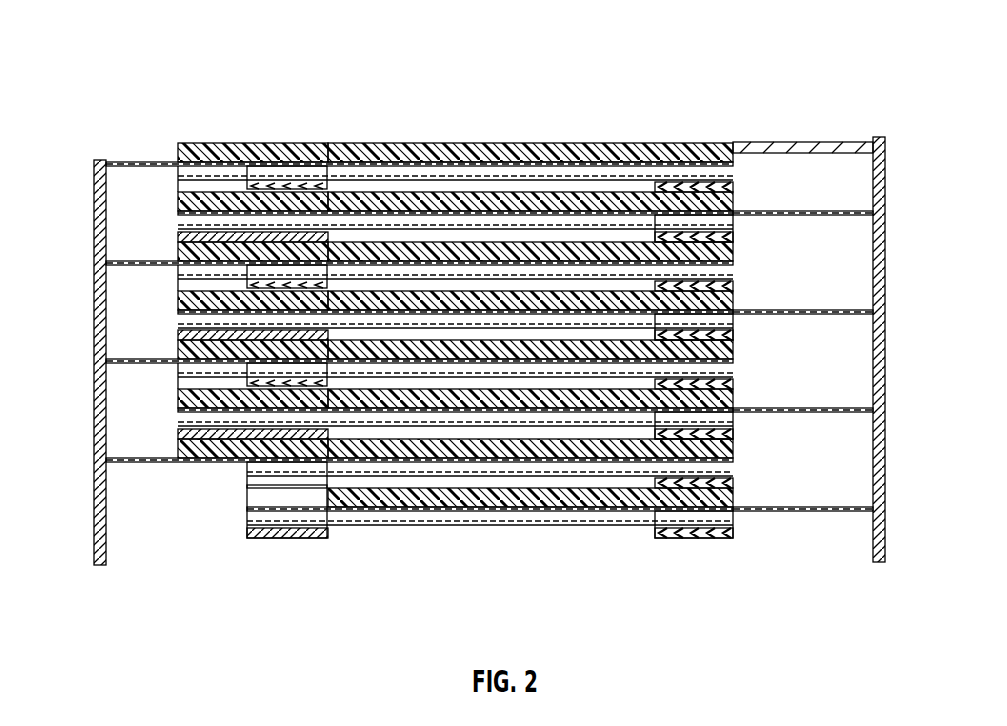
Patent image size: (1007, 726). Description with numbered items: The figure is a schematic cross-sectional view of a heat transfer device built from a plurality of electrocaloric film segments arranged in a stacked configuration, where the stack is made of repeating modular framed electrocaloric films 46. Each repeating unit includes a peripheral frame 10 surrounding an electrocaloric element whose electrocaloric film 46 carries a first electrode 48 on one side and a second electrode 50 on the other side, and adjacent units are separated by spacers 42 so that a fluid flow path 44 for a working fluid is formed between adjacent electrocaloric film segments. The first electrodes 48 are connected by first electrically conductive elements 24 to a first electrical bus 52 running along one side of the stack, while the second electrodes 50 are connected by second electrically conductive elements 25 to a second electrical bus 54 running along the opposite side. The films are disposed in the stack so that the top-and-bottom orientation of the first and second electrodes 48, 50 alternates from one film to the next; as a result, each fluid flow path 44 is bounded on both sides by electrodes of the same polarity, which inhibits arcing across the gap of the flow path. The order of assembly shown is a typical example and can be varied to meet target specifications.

The peripheral frame 10 is at (445, 170).
The first electrically conductive element 24 is at (252, 176).
The second electrically conductive element 25 is at (822, 214).
The spacer 42 is at (735, 185).
The fluid flow path 44 is at (440, 330).
The electrocaloric film 46 is at (322, 152).
The first electrode 48 is at (492, 143).
The second electrode 50 is at (537, 146).
The first electrical bus 52 is at (100, 340).
The second electrical bus 54 is at (880, 386).